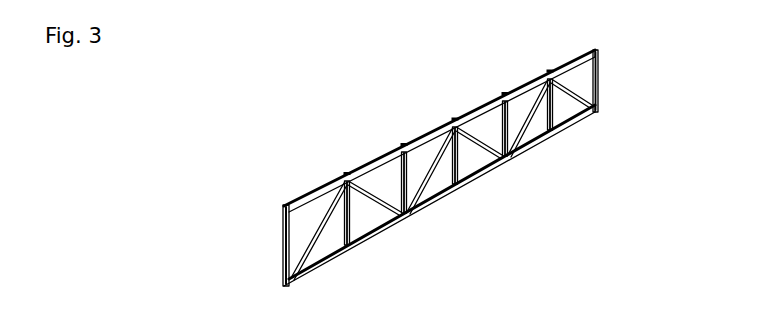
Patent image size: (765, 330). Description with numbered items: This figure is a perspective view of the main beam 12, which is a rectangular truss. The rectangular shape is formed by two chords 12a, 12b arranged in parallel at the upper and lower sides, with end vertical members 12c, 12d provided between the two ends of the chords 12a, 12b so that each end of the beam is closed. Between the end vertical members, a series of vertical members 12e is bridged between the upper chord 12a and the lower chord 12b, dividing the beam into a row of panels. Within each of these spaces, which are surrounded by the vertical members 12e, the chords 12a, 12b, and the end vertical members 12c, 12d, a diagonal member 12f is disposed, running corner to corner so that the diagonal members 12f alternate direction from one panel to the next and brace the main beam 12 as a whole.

The main beam 12 is at (337, 171).
The chord 12a is at (412, 140).
The chord 12b is at (468, 183).
The end vertical member 12c is at (282, 248).
The end vertical member 12d is at (600, 70).
The vertical member 12e is at (345, 224).
The diagonal member 12f is at (314, 232).